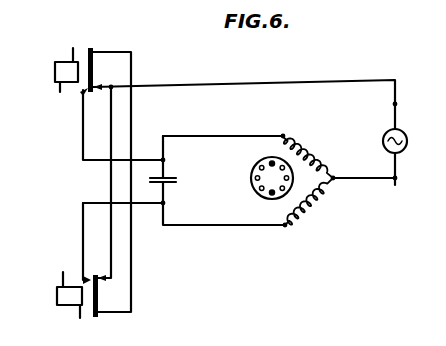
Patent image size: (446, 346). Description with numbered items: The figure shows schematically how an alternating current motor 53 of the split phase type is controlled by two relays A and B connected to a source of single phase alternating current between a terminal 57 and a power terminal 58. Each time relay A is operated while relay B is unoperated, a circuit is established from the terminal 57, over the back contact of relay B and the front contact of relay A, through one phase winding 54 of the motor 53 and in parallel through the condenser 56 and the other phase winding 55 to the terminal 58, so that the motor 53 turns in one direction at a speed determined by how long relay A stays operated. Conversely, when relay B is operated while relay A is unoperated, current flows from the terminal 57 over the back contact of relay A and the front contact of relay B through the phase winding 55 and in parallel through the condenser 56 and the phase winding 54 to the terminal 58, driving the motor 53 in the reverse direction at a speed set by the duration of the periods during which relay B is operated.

The relay A is at (65, 62).
The relay B is at (57, 295).
The motor 53 is at (296, 118).
The phase winding 54 is at (323, 166).
The phase winding 55 is at (317, 208).
The condenser 56 is at (171, 178).
The terminal 57 is at (394, 104).
The terminal 58 is at (395, 179).